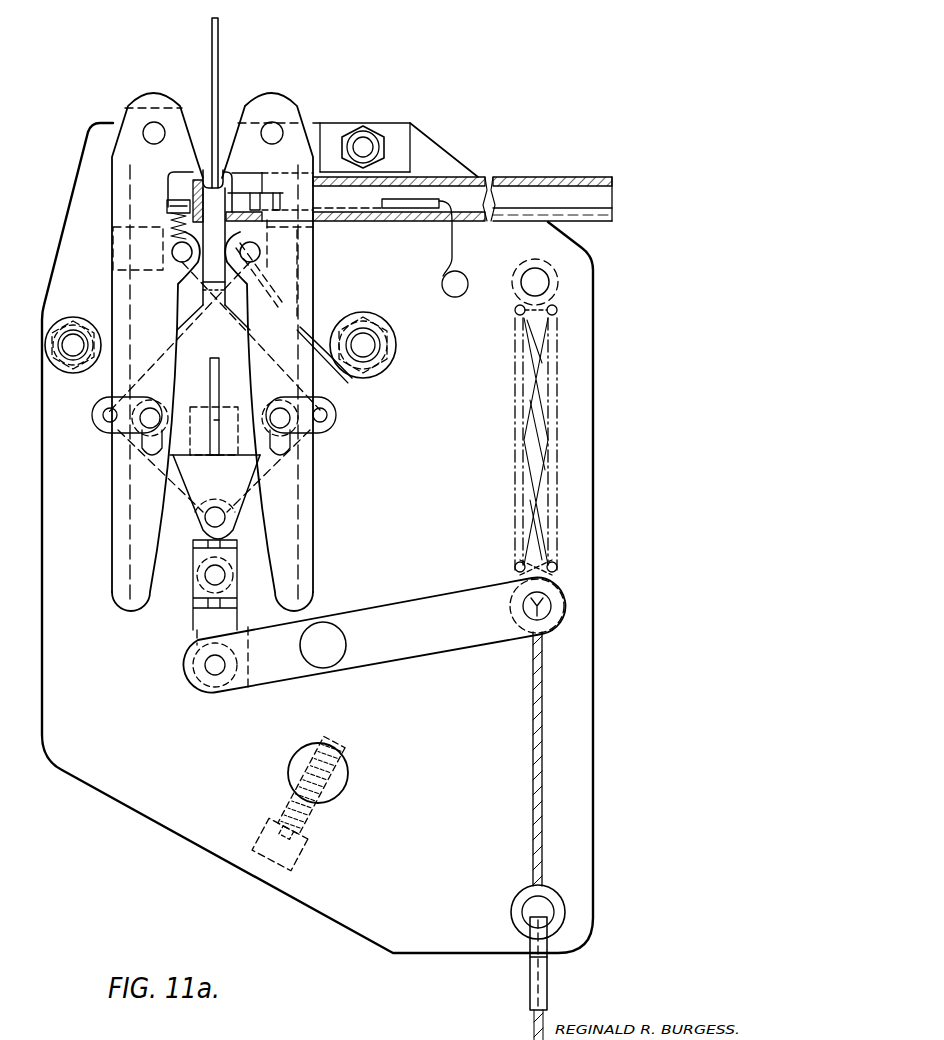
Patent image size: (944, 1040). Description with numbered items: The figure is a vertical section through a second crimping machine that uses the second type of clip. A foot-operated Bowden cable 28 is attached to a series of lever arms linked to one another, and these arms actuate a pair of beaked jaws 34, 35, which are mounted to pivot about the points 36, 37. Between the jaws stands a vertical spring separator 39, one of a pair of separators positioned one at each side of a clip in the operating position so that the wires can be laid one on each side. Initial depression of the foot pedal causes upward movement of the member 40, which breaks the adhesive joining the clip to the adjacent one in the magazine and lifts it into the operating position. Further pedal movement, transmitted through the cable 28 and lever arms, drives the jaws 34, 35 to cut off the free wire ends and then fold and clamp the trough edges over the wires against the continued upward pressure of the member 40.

The foot-operated Bowden cable 28 is at (548, 984).
The beaked jaw 34 is at (135, 115).
The beaked jaw 35 is at (297, 107).
The pivot point 36 is at (172, 252).
The pivot point 37 is at (258, 252).
The vertical spring separator 39 is at (218, 47).
The member 40 is at (205, 287).